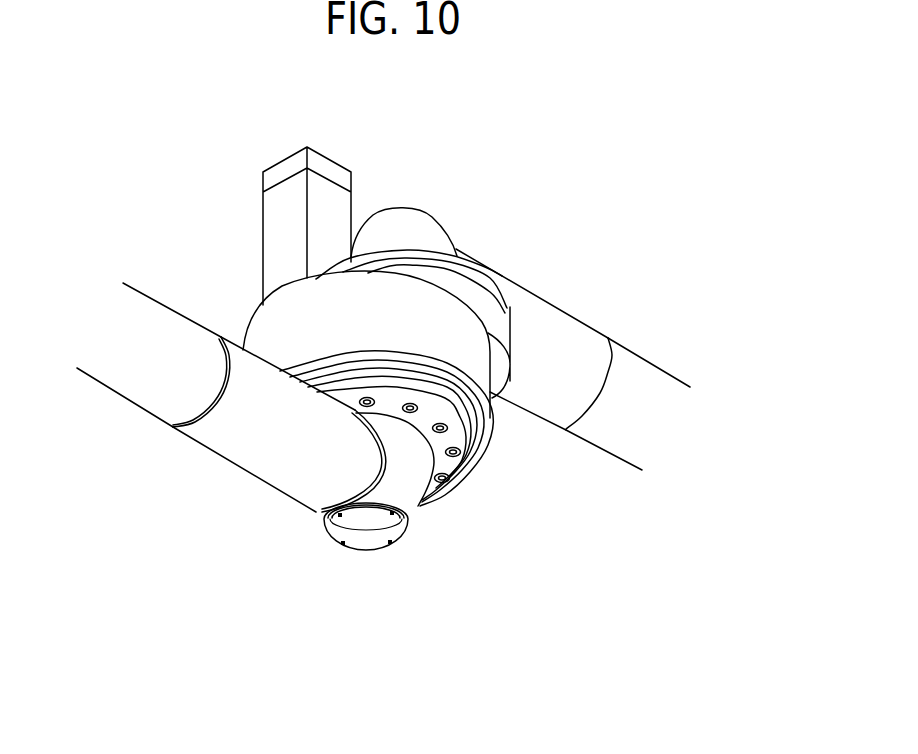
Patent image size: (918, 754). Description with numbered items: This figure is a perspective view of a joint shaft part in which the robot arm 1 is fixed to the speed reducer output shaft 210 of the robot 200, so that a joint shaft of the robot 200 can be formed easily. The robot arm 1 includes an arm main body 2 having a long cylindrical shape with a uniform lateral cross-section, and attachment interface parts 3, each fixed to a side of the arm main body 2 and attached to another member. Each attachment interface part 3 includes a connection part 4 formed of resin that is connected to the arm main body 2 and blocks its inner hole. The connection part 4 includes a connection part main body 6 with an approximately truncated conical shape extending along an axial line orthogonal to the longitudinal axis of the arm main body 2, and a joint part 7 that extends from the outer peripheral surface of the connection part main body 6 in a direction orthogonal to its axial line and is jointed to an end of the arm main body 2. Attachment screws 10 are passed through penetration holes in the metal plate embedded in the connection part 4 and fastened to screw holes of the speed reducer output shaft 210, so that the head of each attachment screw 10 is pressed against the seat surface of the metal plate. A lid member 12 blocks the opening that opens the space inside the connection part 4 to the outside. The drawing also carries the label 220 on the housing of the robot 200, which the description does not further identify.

The robot 200 is at (129, 112).
The housing body 220 is at (265, 328).
The speed reducer output shaft 210 is at (488, 412).
The robot arm 1 is at (525, 108).
The arm main body 2 is at (672, 361).
The attachment interface part 3 is at (385, 174).
The connection part 4 is at (411, 219).
The connection part main body 6 is at (435, 233).
The joint part 7 is at (533, 313).
The attachment screw 10 is at (470, 442).
The lid member 12 is at (362, 530).